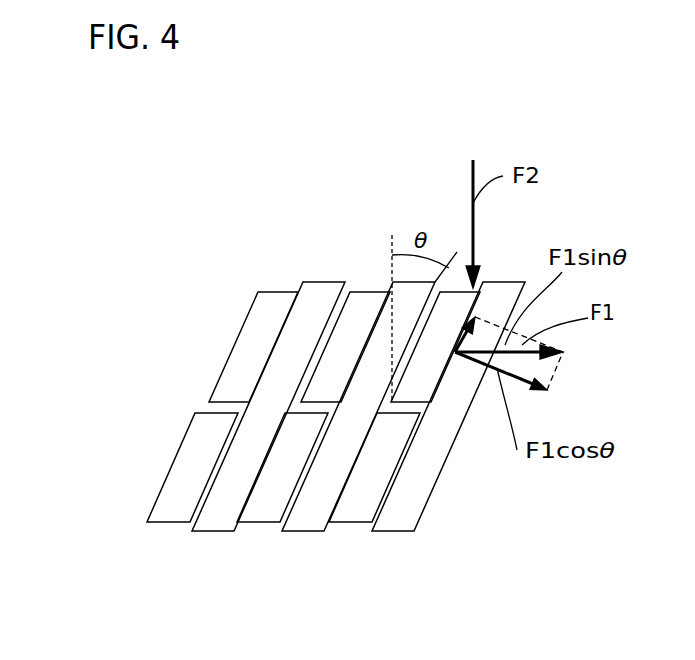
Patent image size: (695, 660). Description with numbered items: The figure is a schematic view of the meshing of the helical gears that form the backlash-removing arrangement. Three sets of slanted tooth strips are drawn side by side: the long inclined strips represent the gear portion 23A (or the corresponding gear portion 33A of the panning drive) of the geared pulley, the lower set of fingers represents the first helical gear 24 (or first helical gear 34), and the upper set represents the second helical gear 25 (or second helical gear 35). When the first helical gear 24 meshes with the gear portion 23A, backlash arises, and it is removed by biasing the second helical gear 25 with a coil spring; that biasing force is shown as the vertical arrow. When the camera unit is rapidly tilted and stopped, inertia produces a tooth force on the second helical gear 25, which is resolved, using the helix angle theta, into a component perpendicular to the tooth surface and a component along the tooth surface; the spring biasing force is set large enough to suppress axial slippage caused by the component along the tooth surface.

The second helical gear 25 is at (253, 350).
The second helical gear 35 is at (284, 347).
The first helical gear 24 is at (192, 465).
The first helical gear 34 is at (224, 467).
The gear portion 23A is at (240, 473).
The gear portion 33A is at (337, 444).